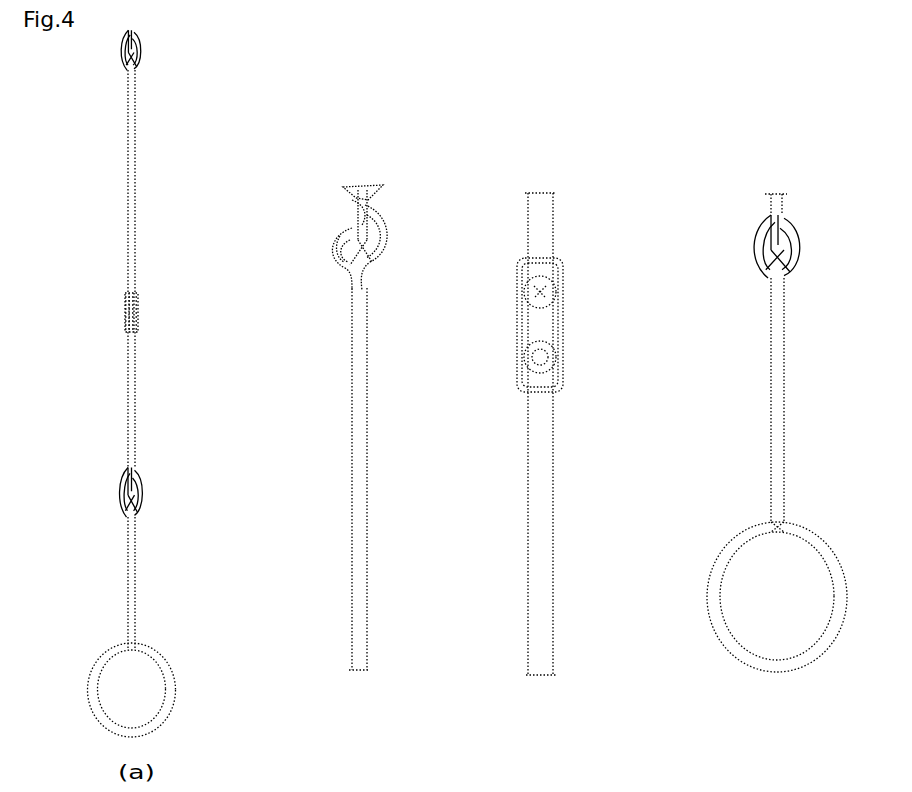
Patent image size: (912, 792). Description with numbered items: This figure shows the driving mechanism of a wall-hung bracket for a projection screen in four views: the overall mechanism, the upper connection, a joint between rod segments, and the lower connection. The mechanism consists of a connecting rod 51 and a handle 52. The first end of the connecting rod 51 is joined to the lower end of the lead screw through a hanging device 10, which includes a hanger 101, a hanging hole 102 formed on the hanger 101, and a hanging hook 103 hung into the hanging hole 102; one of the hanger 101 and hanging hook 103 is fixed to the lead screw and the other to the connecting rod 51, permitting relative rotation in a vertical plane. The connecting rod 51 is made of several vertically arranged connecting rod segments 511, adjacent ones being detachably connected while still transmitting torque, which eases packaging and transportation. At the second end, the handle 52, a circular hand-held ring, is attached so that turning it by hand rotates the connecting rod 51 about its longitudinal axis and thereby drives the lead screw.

The hanging device 10 is at (250, 173).
The hanger 101 is at (383, 190).
The hanging hole 102 is at (360, 208).
The hanging hook 103 is at (343, 243).
The connecting rod 51 is at (168, 366).
The connecting rod segment 511 is at (548, 218).
The handle 52 is at (139, 596).